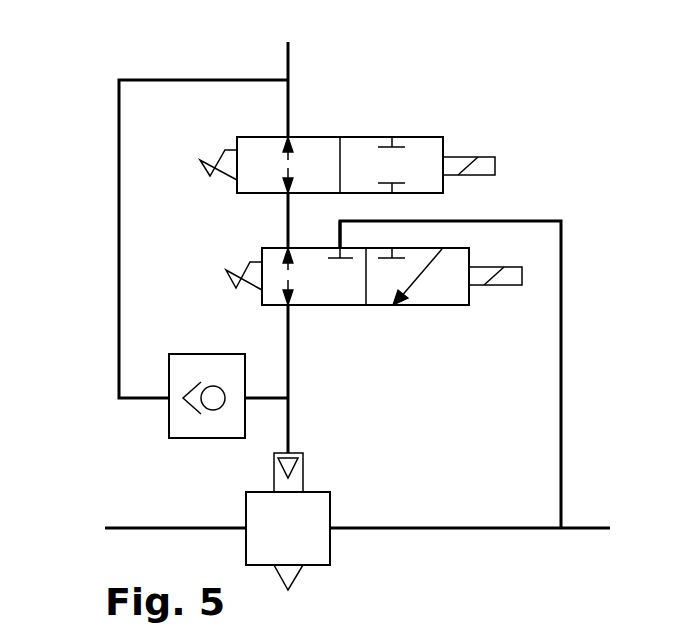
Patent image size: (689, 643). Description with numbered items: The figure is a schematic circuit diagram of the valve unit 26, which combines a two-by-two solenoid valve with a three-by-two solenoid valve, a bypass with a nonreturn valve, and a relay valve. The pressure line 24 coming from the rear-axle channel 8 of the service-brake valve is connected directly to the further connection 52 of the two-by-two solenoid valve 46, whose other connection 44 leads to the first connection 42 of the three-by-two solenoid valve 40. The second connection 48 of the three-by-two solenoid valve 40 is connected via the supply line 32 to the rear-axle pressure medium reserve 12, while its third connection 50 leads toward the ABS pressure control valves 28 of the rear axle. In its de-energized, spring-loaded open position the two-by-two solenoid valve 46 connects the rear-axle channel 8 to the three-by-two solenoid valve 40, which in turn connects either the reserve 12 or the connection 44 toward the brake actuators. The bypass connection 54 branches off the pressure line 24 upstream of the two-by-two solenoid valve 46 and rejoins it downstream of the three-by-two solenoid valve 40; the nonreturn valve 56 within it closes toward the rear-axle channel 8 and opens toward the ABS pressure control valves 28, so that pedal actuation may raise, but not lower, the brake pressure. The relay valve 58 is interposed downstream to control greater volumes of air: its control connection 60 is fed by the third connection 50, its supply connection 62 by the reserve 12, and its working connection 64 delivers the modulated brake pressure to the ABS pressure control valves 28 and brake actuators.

The rear-axle channel 8 is at (287, 75).
The rear-axle pressure medium reserve 12 is at (485, 528).
The pressure line 24 is at (290, 55).
The valve unit 26 is at (571, 109).
The ABS pressure control valves 28 is at (82, 528).
The supply line 32 is at (578, 527).
The 3/2 solenoid valve 40 is at (430, 307).
The first connection 42 is at (287, 245).
The connection 44 is at (287, 197).
The 2/2 solenoid valve 46 is at (425, 141).
The second connection 48 is at (338, 245).
The third connection 50 is at (290, 307).
The further connection 52 is at (286, 136).
The bypass connection 54 is at (119, 222).
The nonreturn valve 56 is at (169, 416).
The relay valve 58 is at (323, 552).
The control connection 60 is at (290, 452).
The supply connection 62 is at (332, 527).
The working connection 64 is at (245, 528).